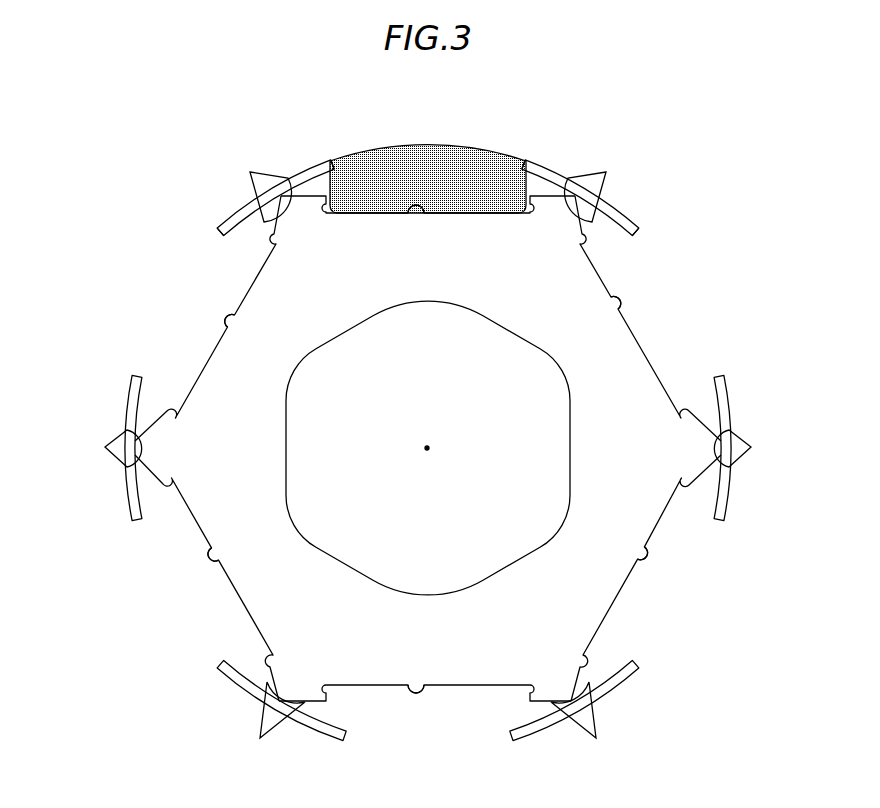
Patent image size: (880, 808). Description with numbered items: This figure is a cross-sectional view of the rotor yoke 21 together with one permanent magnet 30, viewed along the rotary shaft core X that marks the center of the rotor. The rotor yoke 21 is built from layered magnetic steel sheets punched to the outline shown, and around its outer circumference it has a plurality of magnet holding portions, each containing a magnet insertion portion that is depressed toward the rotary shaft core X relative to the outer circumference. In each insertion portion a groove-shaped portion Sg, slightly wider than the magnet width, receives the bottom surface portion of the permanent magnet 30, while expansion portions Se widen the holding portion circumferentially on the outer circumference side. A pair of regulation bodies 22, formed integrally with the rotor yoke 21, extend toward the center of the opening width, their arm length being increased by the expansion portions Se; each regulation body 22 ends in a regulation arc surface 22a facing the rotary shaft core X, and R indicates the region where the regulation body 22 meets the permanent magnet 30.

The rotor yoke 21 is at (640, 345).
The regulation body 22 is at (318, 166).
The regulation arc surface 22a is at (218, 233).
The permanent magnet 30 is at (428, 147).
The fin root junction R is at (339, 161).
The groove-shaped portion Sg is at (241, 318).
The expansion portion Se is at (428, 450).
The rotary shaft core X is at (431, 451).